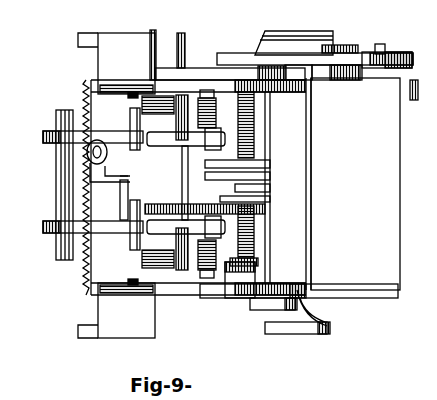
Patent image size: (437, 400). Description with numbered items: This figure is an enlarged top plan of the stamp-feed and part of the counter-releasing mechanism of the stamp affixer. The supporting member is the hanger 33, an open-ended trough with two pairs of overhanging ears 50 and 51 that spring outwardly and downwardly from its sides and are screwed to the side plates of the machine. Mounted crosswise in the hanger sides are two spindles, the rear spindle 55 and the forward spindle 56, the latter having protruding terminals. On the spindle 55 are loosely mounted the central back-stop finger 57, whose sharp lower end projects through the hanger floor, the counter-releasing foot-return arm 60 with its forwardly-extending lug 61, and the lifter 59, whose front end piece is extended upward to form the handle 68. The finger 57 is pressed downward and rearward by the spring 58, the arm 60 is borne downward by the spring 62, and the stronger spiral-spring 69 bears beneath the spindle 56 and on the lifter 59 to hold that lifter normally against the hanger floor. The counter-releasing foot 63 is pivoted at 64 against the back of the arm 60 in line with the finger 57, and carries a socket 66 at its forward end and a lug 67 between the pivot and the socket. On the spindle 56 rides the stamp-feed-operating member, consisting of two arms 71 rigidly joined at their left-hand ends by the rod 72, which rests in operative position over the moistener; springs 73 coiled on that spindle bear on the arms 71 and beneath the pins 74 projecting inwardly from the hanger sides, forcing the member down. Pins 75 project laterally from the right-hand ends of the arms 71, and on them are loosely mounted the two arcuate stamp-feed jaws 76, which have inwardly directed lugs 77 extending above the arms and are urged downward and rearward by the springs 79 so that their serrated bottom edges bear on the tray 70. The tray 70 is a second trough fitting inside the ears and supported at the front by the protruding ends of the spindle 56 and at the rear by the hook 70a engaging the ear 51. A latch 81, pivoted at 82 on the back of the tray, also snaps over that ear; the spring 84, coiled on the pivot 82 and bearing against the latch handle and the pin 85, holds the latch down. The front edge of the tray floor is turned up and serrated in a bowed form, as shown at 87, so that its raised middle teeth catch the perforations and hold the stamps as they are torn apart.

The overhanging ears 50 is at (101, 202).
The pins 74 is at (122, 88).
The stamp-feed jaws 76 is at (139, 92).
The arms 71 is at (50, 130).
The rod 72 is at (58, 197).
The socket 66 is at (87, 153).
The lug 67 is at (124, 163).
The lug 61 is at (121, 203).
The lugs 77 is at (131, 132).
The springs 73 is at (178, 187).
The counter-releasing foot 63 is at (180, 162).
The counter-releasing foot-return arm 60 is at (205, 198).
The spiral-spring 69 is at (256, 138).
The spring 58 is at (255, 164).
The back-stop finger 57 is at (262, 178).
The pivot 64 is at (240, 190).
The lifter 59 is at (262, 200).
The spring 62 is at (256, 250).
The pins 75 is at (268, 105).
The hanger 33 is at (312, 109).
The tray 70 is at (300, 188).
The springs 79 is at (202, 100).
The overhanging ears 51 is at (275, 58).
The latch 81 is at (274, 54).
The pivot 82 is at (340, 46).
The pin 85 is at (382, 46).
The spring 84 is at (360, 70).
The hook 70a is at (305, 84).
The spindle 55 is at (240, 300).
The spindle 56 is at (232, 310).
The handle 68 is at (302, 304).
The serrated edge 87 is at (86, 268).